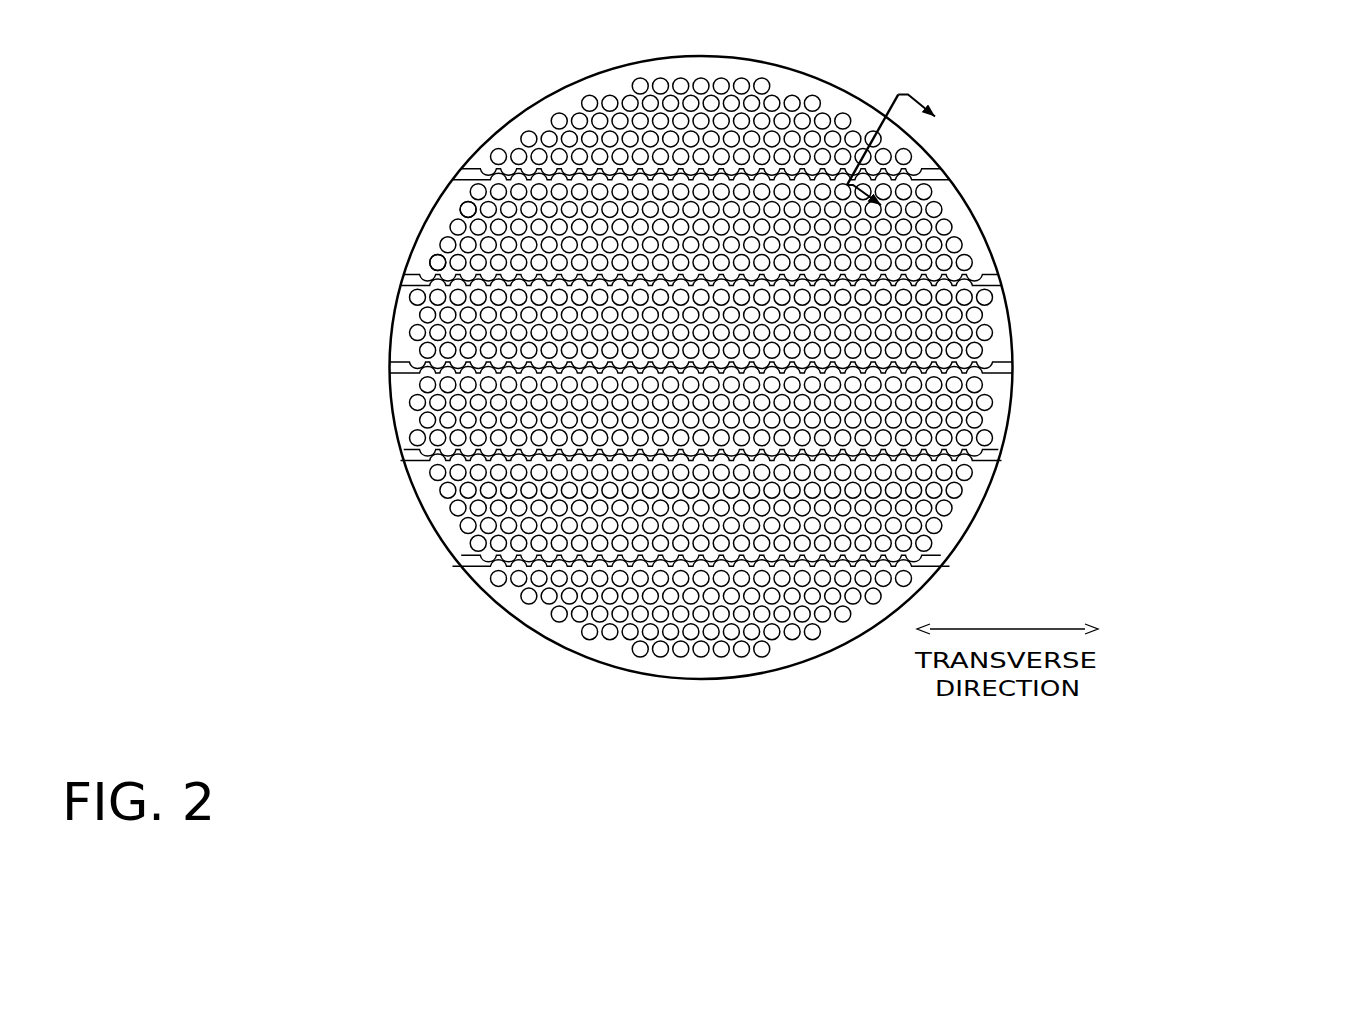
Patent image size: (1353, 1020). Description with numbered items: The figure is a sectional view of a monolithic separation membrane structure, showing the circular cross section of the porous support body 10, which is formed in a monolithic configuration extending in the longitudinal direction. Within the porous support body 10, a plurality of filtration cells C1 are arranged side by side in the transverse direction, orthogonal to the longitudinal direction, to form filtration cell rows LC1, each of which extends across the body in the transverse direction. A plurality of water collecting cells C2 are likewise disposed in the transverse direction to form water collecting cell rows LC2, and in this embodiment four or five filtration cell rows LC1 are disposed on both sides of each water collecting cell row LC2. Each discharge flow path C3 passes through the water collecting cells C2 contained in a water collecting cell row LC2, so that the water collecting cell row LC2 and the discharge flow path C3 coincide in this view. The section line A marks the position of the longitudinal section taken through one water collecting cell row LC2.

The porous support body 10 is at (791, 367).
The filtration cell C1 is at (463, 204).
The water collecting cell C2 is at (444, 276).
The filtration cell row LC1 is at (937, 192).
The water collecting cell row LC2 is at (947, 172).
The discharge flow path C3 is at (1005, 280).
The section line A- A is at (903, 160).